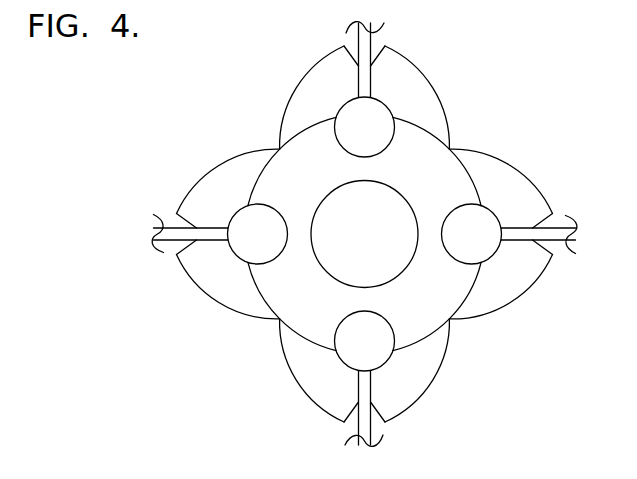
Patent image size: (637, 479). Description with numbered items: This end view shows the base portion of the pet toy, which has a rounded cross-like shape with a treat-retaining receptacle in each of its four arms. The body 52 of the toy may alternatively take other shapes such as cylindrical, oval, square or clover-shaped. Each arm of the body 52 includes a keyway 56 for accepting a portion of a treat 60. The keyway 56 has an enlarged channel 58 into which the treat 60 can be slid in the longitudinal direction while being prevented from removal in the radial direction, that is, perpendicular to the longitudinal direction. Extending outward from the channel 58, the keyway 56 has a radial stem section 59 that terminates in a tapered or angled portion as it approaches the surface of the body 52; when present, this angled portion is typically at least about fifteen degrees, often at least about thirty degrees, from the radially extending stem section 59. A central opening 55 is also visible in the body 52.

The body 52 is at (446, 108).
The central aperture 55 is at (407, 202).
The keyway 56 is at (386, 106).
The enlarged channel 58 is at (338, 111).
The radial stem section 59 is at (358, 81).
The treat 60 is at (215, 228).